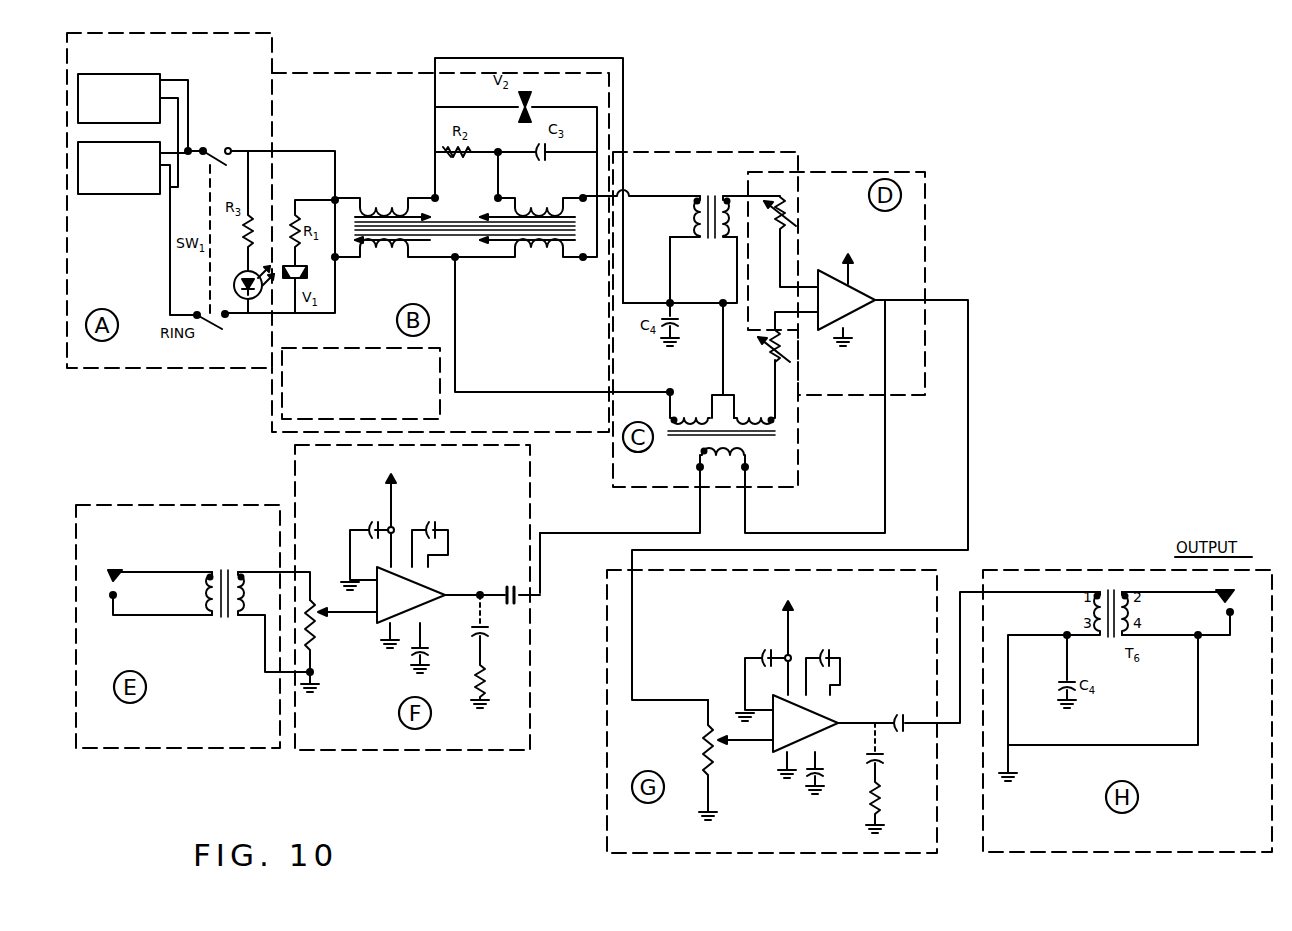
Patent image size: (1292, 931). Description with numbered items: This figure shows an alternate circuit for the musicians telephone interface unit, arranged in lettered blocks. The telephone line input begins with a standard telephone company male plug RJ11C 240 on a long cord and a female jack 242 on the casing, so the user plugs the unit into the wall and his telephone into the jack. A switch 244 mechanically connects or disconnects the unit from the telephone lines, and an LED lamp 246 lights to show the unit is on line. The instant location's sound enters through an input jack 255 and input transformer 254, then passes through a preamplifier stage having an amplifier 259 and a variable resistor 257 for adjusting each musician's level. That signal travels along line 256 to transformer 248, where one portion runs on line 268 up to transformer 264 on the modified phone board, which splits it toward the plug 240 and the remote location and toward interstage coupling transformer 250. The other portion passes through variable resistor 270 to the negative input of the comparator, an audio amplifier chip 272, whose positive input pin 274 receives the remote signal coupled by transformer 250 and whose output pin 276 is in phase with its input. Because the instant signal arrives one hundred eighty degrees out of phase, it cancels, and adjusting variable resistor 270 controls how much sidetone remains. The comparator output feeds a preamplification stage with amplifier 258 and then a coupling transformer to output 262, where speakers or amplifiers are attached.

The male plug RJ11C 240 is at (143, 75).
The female jack 242 is at (96, 194).
The switch 244 is at (231, 150).
The LED lamp 246 is at (257, 297).
The transformer 248 is at (702, 443).
The interstage coupling transformer 250 is at (715, 195).
The input transformer 254 is at (225, 578).
The input jack 255 is at (120, 587).
The line 256 is at (618, 532).
The variable resistor 257 is at (318, 634).
The amplifier 258 is at (822, 713).
The amplifier 259 is at (414, 586).
The output 262 is at (1238, 617).
The transformer 264 is at (466, 250).
The line 268 is at (440, 365).
The variable resistor 270 is at (793, 352).
The audio amplifier chip 272 is at (860, 297).
The positive input pin 274 is at (805, 280).
The output pin 276 is at (878, 299).